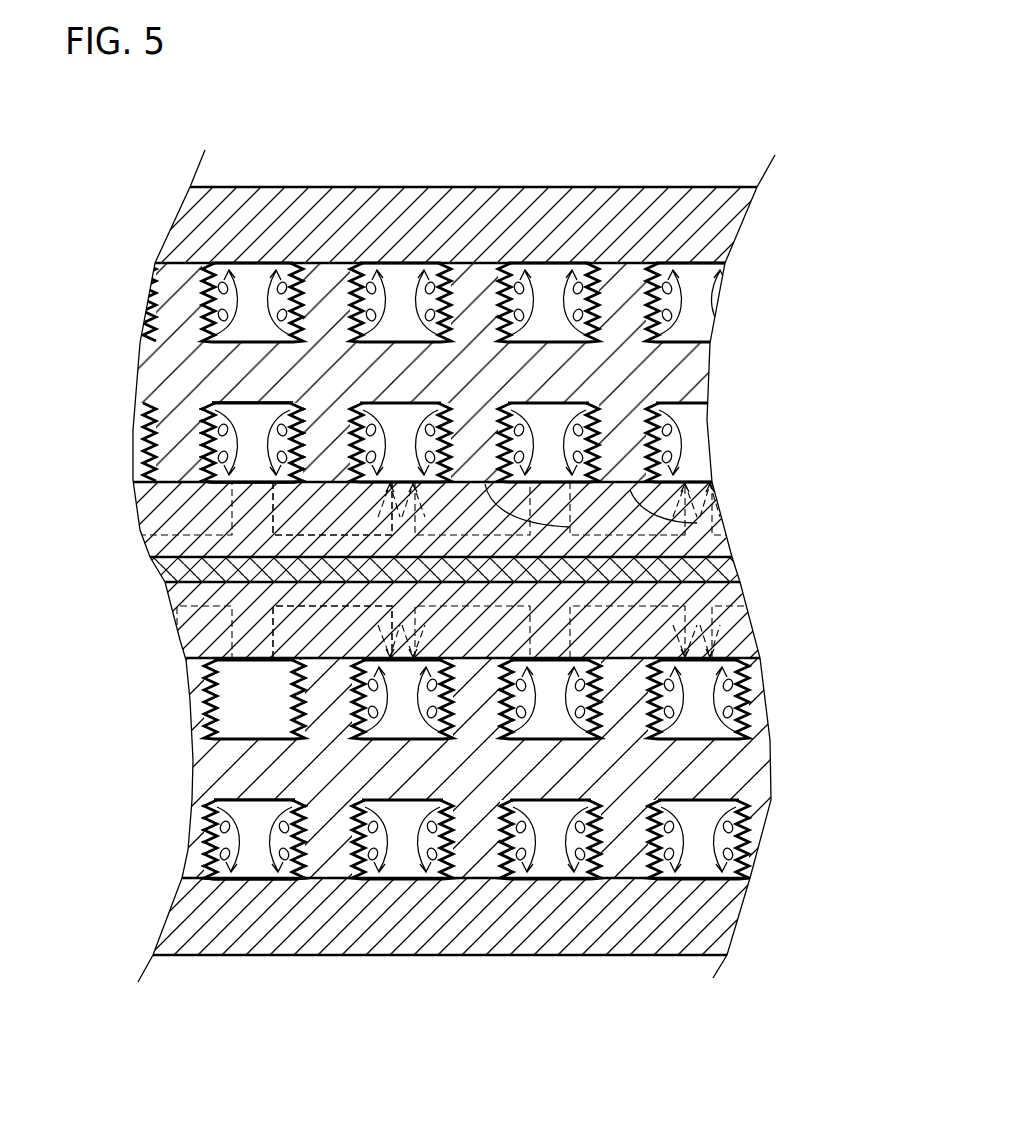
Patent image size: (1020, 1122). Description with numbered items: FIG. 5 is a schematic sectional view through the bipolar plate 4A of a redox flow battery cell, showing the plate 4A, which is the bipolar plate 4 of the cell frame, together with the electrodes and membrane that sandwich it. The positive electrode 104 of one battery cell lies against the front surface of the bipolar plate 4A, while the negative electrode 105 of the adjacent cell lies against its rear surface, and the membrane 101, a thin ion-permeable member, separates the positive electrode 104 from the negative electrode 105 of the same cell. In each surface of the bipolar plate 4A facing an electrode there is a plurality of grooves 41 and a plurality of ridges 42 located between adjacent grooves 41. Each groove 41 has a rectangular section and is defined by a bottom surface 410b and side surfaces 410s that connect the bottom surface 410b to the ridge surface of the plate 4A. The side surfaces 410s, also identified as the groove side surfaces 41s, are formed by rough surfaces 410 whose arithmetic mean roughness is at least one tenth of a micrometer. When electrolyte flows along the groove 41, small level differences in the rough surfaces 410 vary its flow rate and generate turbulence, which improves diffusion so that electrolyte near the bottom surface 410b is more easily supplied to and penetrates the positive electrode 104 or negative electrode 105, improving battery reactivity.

The bipolar plate 4 is at (484, 570).
The bipolar plate 4A is at (700, 372).
The groove 41 is at (433, 575).
The side surface of the groove 41s is at (232, 550).
The ridge 42 is at (232, 548).
The membrane 101 is at (723, 567).
The positive electrode 104 is at (693, 542).
The negative electrode 105 is at (725, 217).
The rough surface 410 is at (162, 641).
The side surface 410s is at (277, 482).
The bottom surface 410b is at (203, 423).